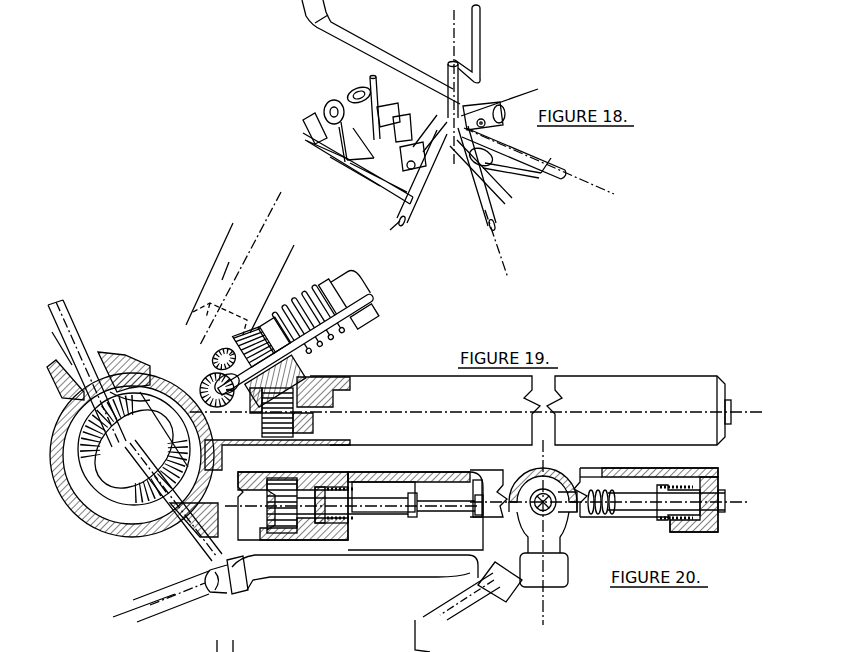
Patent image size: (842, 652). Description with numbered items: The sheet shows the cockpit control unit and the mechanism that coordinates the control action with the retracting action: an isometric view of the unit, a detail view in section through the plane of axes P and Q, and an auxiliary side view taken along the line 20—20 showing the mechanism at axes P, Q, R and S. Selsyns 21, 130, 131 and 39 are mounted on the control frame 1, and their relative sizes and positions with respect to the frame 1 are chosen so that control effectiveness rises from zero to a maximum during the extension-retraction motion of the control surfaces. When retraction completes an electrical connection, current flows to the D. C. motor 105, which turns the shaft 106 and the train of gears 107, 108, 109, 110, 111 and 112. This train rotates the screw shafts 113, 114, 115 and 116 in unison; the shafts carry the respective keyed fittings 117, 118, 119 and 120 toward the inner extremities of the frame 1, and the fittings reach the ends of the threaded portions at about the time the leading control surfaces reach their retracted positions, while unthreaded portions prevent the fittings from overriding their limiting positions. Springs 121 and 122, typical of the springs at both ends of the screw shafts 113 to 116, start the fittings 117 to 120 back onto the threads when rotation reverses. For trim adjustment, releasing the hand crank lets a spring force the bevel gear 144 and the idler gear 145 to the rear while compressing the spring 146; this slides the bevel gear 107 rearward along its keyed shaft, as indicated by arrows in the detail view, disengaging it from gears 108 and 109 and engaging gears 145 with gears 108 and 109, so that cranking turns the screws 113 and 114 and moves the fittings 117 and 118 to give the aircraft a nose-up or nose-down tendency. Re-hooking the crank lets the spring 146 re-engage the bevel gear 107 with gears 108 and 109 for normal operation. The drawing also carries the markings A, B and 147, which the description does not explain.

In FIG. 18, the control frame 1 is at (351, 34).
In FIG. 18, the vertical post B is at (455, 24).
In FIG. 18, the Selsyn 39 is at (388, 102).
In FIG. 18, the Selsyn 130 is at (349, 96).
In FIG. 18, the Selsyn 131 is at (380, 98).
In FIG. 18, the Selsyn 21 is at (330, 102).
In FIG. 18, the axis A is at (354, 200).
In FIG. 18, the axis R is at (390, 230).
In FIG. 19, the axis R is at (200, 553).
In FIG. 18, the axis S is at (551, 158).
In FIG. 19, the axis S is at (80, 350).
In FIG. 18, the axis Q is at (584, 181).
In FIG. 19, the axis Q is at (240, 283).
In FIG. 18, the axis P is at (503, 258).
In FIG. 19, the axis P is at (602, 412).
In FIG. 20, the axis P is at (560, 510).
In FIG. 18, the D. C. motor 105 is at (486, 164).
In FIG. 19, the D. C. motor 105 is at (327, 321).
In FIG. 19, the shaft 106 is at (360, 327).
In FIG. 19, the bevel gear 107 is at (222, 280).
In FIG. 19, the gear 109 is at (207, 308).
In FIG. 19, the idler gear 145 is at (240, 338).
In FIG. 19, the bevel gear 147 is at (215, 372).
In FIG. 19, the bevel gear 144 is at (200, 390).
In FIG. 19, the spring 146 is at (332, 344).
In FIG. 19, the gear 112 is at (73, 521).
In FIG. 19, the gear 110 is at (116, 489).
In FIG. 19, the gear 111 is at (183, 408).
In FIG. 19, the section line 20 is at (235, 419).
In FIG. 19, the gear 108 is at (277, 412).
In FIG. 20, the gear 108 is at (296, 470).
In FIG. 20, the spring 121 is at (358, 518).
In FIG. 20, the keyed fitting 117 is at (341, 582).
In FIG. 20, the keyed fitting 118 is at (341, 582).
In FIG. 20, the keyed fitting 119 is at (341, 582).
In FIG. 20, the keyed fitting 120 is at (400, 577).
In FIG. 20, the spring 122 is at (656, 525).
In FIG. 20, the screw shaft 113 is at (660, 521).
In FIG. 20, the screw shaft 114 is at (660, 521).
In FIG. 20, the screw shaft 115 is at (660, 521).
In FIG. 20, the screw shaft 116 is at (607, 517).